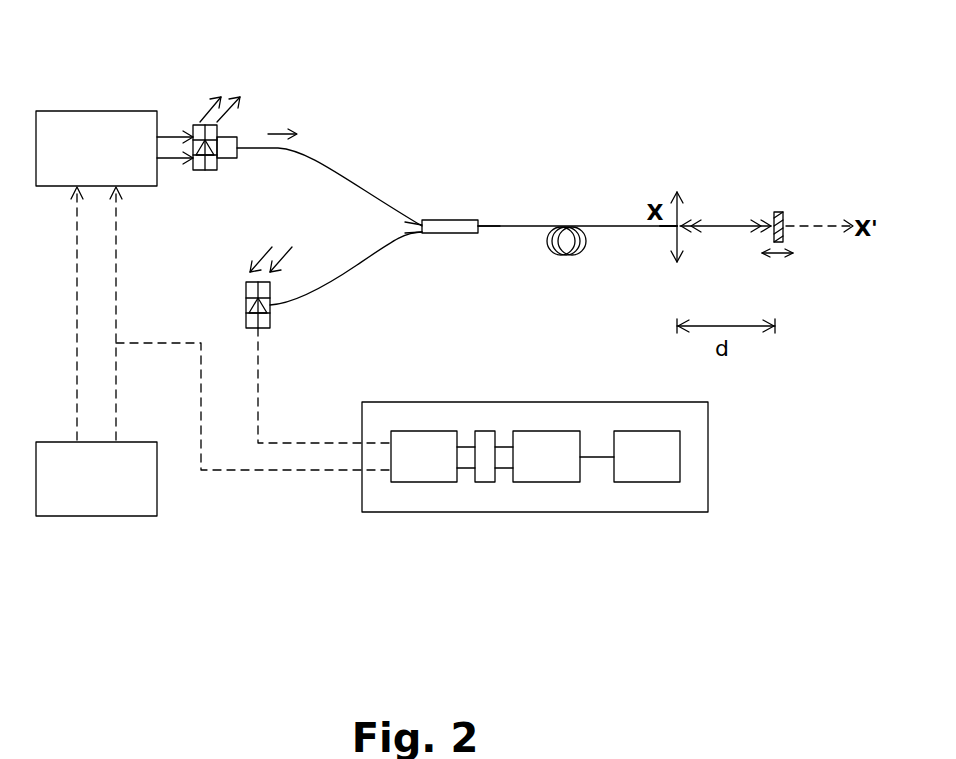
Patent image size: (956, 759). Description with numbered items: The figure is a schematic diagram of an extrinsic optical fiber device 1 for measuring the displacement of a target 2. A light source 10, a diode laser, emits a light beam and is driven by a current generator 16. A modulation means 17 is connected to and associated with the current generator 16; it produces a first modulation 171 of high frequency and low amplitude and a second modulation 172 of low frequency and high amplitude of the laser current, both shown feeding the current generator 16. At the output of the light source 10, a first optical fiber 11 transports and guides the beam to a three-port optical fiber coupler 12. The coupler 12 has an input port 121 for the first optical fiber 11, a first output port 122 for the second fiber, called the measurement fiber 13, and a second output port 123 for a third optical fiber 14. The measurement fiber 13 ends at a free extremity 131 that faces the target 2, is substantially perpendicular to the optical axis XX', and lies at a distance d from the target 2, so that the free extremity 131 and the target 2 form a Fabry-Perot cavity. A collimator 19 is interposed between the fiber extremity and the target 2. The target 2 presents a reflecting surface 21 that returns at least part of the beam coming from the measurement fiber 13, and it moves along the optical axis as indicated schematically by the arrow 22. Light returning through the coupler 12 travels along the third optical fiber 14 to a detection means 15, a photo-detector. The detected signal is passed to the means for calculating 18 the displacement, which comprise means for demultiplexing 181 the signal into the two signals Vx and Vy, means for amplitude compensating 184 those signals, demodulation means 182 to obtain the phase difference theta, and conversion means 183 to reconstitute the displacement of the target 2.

The extrinsic optical fiber device 1 is at (252, 542).
The target 2 is at (804, 200).
The light source 10 is at (192, 104).
The first optical fiber 11 is at (322, 157).
The three-port optical fiber coupler 12 is at (443, 222).
The input port 121 is at (420, 225).
The first output port 122 is at (480, 226).
The second output port 123 is at (420, 232).
The measurement fiber 13 is at (540, 226).
The free extremity 131 is at (676, 212).
The third optical fiber 14 is at (356, 264).
The detection means 15 is at (287, 324).
The current generator 16 is at (92, 122).
The modulation means 17 is at (103, 502).
The first modulation 171 is at (116, 300).
The second modulation 172 is at (77, 343).
The means for calculating 18 is at (535, 471).
The means for demultiplexing 181 is at (420, 473).
The demodulation means 182 is at (545, 473).
The conversion means 183 is at (648, 473).
The means for amplitude compensating 184 is at (487, 473).
The collimator 19 is at (668, 237).
The surface 21 is at (766, 206).
The arrow 22 is at (792, 254).